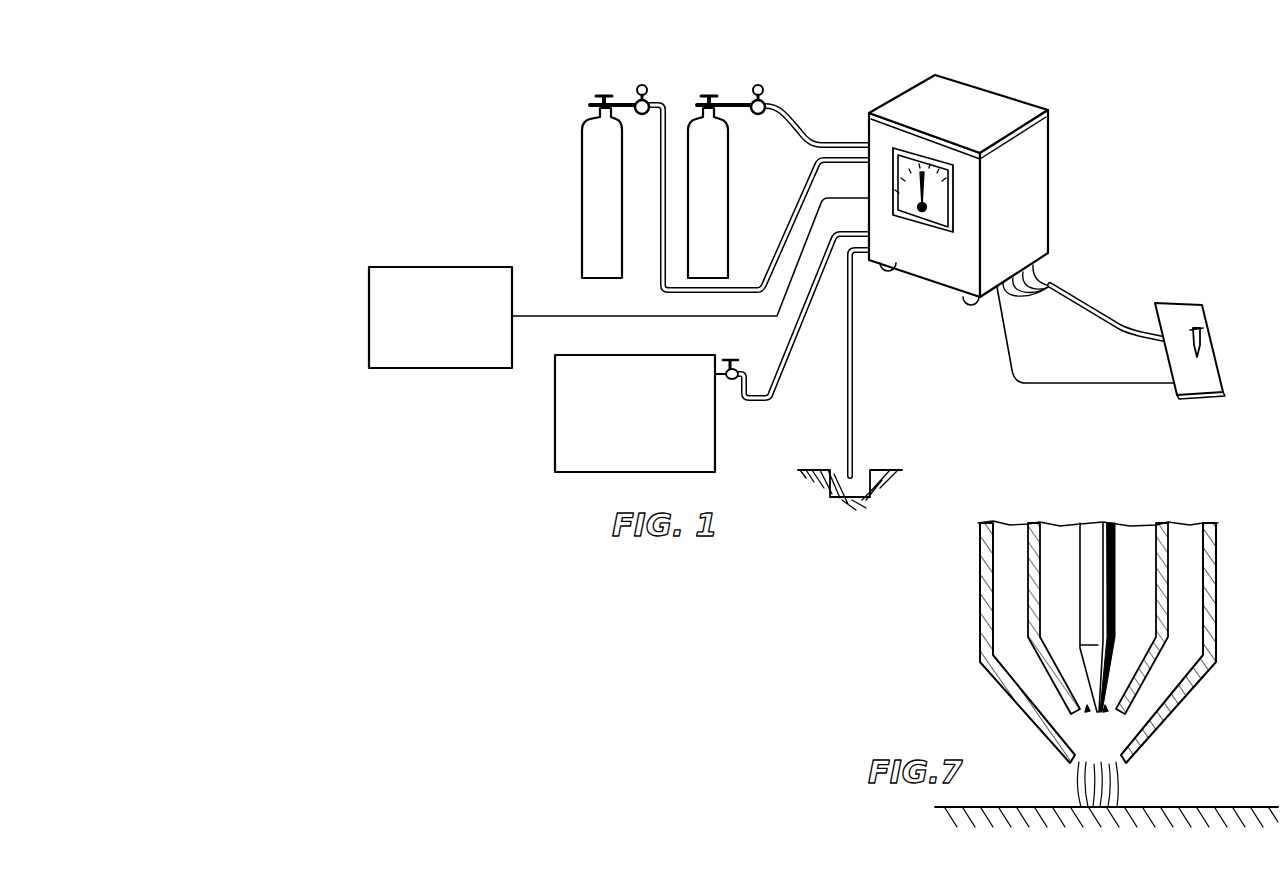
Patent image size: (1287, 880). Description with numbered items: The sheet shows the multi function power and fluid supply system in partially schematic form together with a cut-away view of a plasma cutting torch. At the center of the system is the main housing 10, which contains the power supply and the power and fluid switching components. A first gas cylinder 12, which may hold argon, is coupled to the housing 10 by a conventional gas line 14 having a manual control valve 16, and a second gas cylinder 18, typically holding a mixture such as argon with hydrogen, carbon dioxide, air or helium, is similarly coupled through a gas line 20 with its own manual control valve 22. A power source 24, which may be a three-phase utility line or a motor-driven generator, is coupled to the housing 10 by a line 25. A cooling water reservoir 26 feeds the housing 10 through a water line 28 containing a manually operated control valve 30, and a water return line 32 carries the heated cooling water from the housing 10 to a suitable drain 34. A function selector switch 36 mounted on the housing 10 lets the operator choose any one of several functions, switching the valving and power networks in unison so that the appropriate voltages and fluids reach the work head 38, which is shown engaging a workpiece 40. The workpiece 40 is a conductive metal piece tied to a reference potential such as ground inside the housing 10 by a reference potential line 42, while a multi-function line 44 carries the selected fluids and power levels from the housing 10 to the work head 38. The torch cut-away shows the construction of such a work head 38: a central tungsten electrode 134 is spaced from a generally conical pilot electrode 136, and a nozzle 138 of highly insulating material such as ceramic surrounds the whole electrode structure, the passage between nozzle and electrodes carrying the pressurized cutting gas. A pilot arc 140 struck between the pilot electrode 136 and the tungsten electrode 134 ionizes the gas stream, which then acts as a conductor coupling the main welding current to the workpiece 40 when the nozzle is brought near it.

In FIG. 1, the main housing 10 is at (971, 177).
In FIG. 1, the first gas cylinder 12 is at (582, 171).
In FIG. 1, the gas line 14 is at (662, 172).
In FIG. 1, the manual control valve 16 is at (649, 101).
In FIG. 1, the second gas cylinder 18 is at (729, 172).
In FIG. 1, the gas line 20 is at (805, 124).
In FIG. 1, the manual control valve 22 is at (762, 100).
In FIG. 1, the power source 24 is at (431, 266).
In FIG. 1, the power cable 25 is at (542, 315).
In FIG. 1, the cooling water reservoir 26 is at (555, 415).
In FIG. 1, the water line 28 is at (780, 379).
In FIG. 1, the control valve 30 is at (741, 369).
In FIG. 1, the water return line 32 is at (853, 343).
In FIG. 1, the drain 34 is at (871, 470).
In FIG. 1, the function selector switch 36 is at (933, 218).
In FIG. 1, the work head 38 is at (1203, 338).
In FIG. 7, the work head 38 is at (1081, 641).
In FIG. 1, the workpiece 40 is at (1188, 305).
In FIG. 7, the workpiece 40 is at (1183, 806).
In FIG. 1, the reference potential line 42 is at (1013, 345).
In FIG. 1, the multi-function line 44 is at (1080, 296).
In FIG. 7, the central tungsten electrode 134 is at (1083, 537).
In FIG. 7, the pilot electrode 136 is at (1157, 540).
In FIG. 7, the nozzle 138 is at (1210, 608).
In FIG. 7, the pilot arc 140 is at (1124, 671).